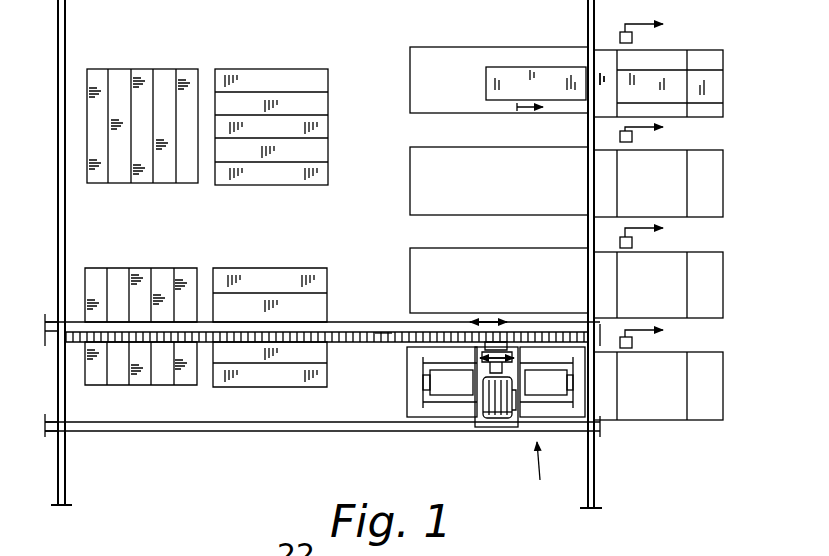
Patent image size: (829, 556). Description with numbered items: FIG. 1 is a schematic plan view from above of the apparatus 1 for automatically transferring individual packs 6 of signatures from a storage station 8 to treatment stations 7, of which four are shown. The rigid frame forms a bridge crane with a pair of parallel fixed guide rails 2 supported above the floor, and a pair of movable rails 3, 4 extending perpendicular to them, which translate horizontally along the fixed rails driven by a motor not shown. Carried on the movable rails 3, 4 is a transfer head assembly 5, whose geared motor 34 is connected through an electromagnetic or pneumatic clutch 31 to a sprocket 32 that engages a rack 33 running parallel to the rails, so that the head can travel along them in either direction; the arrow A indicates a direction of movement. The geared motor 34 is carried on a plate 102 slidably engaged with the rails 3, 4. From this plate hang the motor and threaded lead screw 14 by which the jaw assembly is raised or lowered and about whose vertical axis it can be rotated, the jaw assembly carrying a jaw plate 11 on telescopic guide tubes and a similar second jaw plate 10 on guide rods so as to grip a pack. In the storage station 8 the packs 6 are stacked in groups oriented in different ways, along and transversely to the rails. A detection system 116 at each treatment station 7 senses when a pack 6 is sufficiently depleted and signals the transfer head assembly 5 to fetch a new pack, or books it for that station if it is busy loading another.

The apparatus 1 is at (403, 275).
The fixed guide rail 2 is at (65, 30).
The movable rail 3 is at (363, 344).
The movable rail 4 is at (357, 432).
The transfer head assembly 5 is at (540, 479).
The pack of signatures 6 is at (217, 199).
The treatment station 7 is at (733, 373).
The storage station 8 is at (281, 63).
The second jaw plate 10 is at (430, 378).
The jaw plate 11 is at (568, 382).
The threaded lead screw 14 is at (468, 83).
The clutch 31 is at (483, 362).
The sprocket 32 is at (503, 340).
The rack 33 is at (383, 338).
The geared motor 34 is at (500, 400).
The plate 102 is at (479, 420).
The detection system 116 is at (676, 344).
The direction A is at (523, 115).